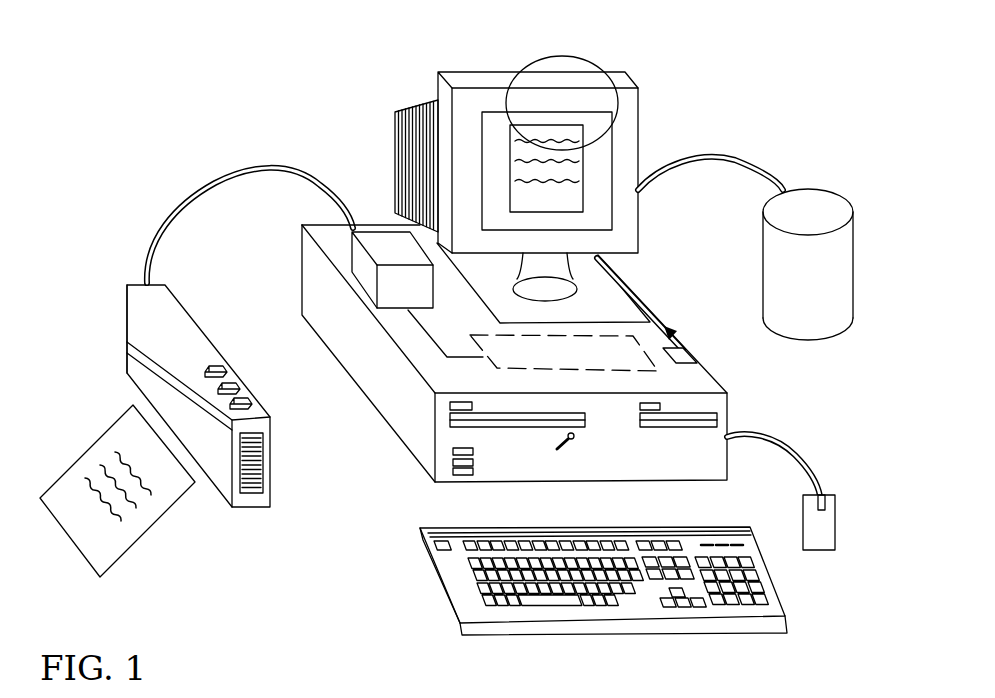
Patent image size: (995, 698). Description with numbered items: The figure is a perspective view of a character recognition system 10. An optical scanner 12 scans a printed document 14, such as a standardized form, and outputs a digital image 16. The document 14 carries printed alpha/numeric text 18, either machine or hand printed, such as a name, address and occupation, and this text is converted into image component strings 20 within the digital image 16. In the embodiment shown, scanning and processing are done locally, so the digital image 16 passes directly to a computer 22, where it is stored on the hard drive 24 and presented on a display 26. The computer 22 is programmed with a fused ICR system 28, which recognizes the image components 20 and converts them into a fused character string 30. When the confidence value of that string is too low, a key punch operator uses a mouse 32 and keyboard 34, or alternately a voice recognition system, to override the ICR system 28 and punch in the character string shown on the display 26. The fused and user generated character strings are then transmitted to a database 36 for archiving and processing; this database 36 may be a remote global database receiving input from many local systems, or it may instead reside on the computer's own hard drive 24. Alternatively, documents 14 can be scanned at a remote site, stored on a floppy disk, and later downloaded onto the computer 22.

The character recognition system 10 is at (250, 79).
The optical scanner 12 is at (237, 507).
The printed document 14 is at (93, 449).
The digital image 16 is at (606, 62).
The printed alpha/numeric text 18 is at (143, 487).
The image component strings 20 is at (524, 71).
The computer 22 is at (642, 274).
The hard drive 24 is at (391, 245).
The display 26 is at (458, 77).
The fused ICR system 28 is at (589, 360).
The fused character string 30 is at (688, 348).
The mouse 32 is at (835, 516).
The keyboard 34 is at (420, 530).
The database 36 is at (815, 340).